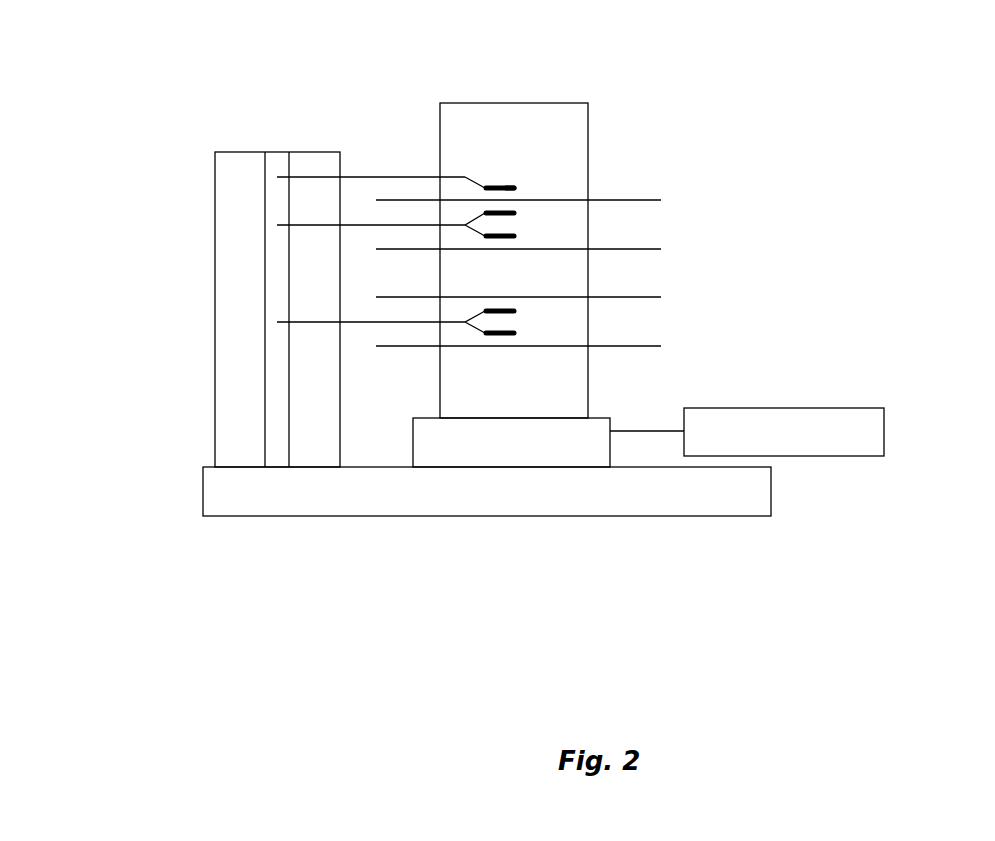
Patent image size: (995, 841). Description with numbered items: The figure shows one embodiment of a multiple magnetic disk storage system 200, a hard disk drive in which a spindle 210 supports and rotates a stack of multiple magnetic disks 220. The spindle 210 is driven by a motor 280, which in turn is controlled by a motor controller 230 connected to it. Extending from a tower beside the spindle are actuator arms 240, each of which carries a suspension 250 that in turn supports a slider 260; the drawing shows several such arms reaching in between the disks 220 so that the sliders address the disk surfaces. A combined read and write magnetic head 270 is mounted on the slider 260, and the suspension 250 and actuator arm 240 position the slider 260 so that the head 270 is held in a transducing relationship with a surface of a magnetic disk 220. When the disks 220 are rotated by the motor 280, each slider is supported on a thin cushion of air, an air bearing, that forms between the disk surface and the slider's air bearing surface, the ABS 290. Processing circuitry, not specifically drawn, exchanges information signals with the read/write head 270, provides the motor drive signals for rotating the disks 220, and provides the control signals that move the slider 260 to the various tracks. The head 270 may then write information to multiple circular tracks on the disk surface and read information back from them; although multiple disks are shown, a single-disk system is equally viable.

The multiple magnetic disk storage system 200 is at (91, 590).
The spindle 210 is at (575, 103).
The magnetic disks 220 is at (626, 200).
The motor controller 230 is at (810, 408).
The actuator arm 240 is at (390, 172).
The suspension 250 is at (477, 176).
The slider 260 is at (503, 184).
The read/write magnetic head 270 is at (512, 335).
The motor 280 is at (600, 418).
The ABS 290 is at (510, 184).